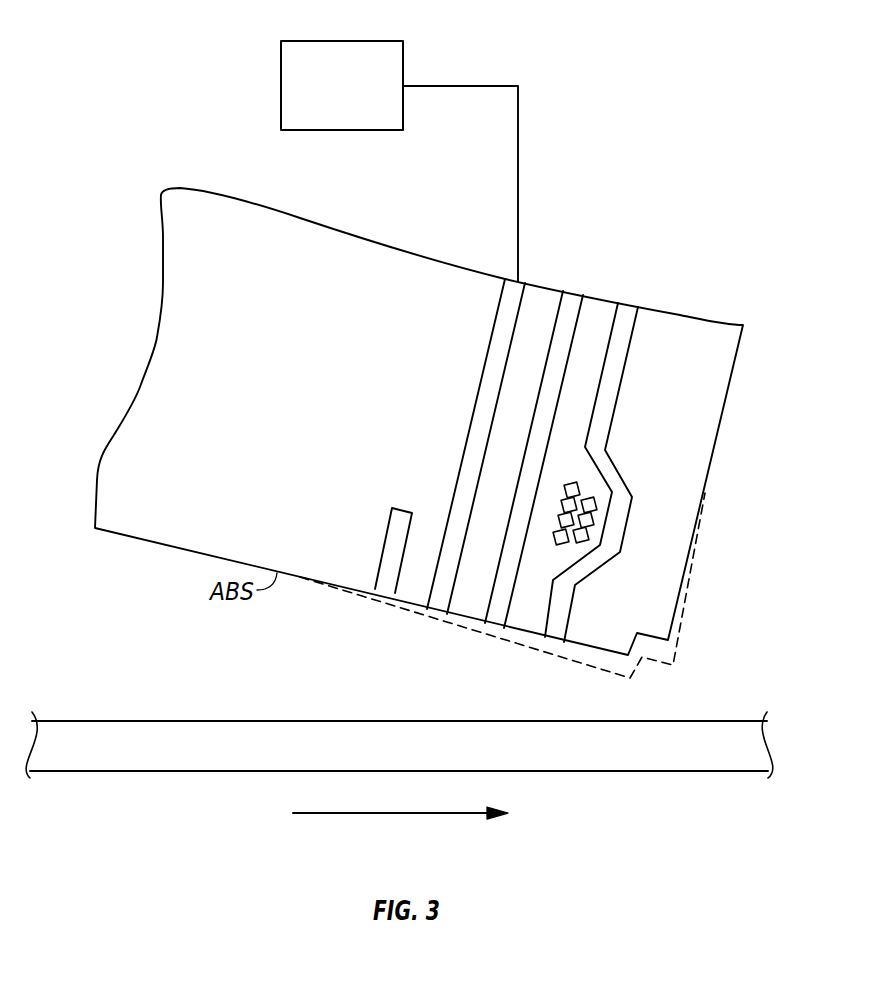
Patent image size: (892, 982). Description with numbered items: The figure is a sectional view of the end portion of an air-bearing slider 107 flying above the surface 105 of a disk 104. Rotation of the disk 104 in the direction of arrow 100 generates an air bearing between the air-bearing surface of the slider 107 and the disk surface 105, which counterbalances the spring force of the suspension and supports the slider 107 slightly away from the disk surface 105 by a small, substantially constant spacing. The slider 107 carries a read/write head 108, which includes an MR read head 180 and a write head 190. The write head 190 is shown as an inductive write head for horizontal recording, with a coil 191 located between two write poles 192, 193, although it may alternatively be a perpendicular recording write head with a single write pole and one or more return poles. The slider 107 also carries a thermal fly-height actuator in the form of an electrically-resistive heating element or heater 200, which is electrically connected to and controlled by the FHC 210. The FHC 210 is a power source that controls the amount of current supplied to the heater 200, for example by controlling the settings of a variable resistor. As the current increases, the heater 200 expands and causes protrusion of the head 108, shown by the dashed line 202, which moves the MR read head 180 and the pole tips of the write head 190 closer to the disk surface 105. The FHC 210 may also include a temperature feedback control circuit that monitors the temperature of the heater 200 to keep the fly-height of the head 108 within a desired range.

The arrow 100 is at (398, 815).
The disk 104 is at (705, 763).
The disk surface 105 is at (172, 719).
The slider 107 is at (192, 501).
The read/write head 108 is at (642, 268).
The MR read head 180 is at (486, 263).
The write head 190 is at (640, 311).
The coil 191 is at (593, 517).
The write pole 192 is at (497, 620).
The write pole 193 is at (555, 628).
The heater 200 is at (487, 400).
The dashed line 202 is at (415, 613).
The FHC 210 is at (315, 39).